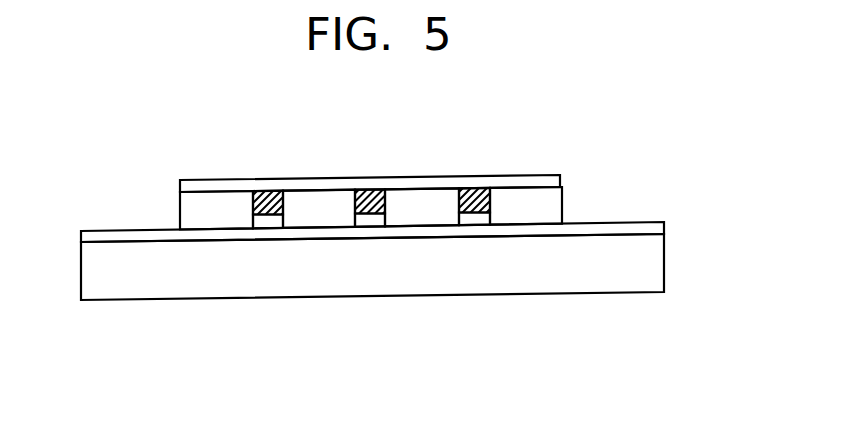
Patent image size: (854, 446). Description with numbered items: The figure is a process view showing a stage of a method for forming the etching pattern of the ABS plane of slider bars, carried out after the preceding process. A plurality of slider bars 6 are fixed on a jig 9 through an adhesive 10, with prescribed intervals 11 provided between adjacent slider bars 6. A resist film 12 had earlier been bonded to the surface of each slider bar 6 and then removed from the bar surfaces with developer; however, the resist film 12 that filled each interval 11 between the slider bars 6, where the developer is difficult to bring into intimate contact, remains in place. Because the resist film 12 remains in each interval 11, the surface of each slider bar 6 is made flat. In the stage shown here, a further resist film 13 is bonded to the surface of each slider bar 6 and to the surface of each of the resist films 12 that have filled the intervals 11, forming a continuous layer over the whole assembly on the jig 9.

The slider bar 6 is at (219, 207).
The jig 9 is at (651, 270).
The adhesive 10 is at (653, 228).
The interval 11 is at (269, 222).
The resist film 12 is at (272, 192).
The resist film 13 is at (550, 178).